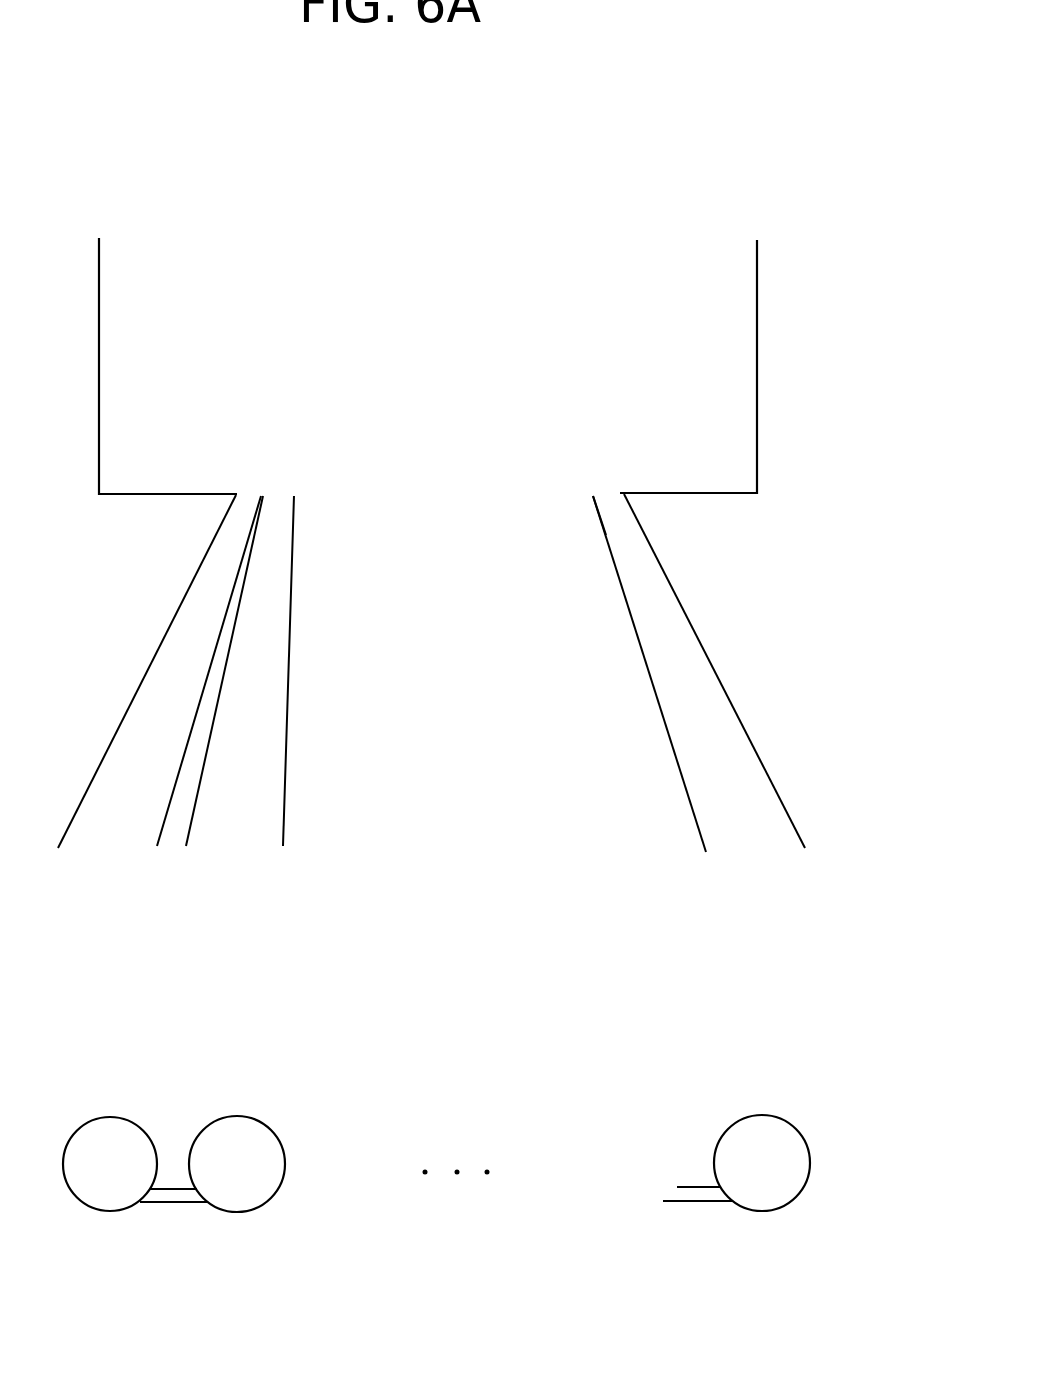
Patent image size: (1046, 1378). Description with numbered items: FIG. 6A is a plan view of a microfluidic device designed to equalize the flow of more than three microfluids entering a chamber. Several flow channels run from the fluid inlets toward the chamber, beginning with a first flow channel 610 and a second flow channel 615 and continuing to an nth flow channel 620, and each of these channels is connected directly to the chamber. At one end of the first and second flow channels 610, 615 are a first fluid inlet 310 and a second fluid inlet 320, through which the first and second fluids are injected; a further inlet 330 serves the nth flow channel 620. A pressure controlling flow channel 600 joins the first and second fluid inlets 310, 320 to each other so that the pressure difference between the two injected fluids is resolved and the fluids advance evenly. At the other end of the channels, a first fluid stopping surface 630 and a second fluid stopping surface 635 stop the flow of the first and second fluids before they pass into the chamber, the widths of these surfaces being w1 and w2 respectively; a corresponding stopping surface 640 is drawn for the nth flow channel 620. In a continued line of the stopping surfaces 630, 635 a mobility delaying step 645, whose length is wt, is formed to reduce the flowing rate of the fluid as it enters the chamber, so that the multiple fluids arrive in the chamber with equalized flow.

The first fluid inlet 310 is at (108, 1213).
The second fluid inlet 320 is at (235, 1213).
The last pixel 330 is at (760, 1212).
The pressure controlling flow channel 600 is at (172, 1205).
The first flow channel 610 is at (110, 845).
The second flow channel 615 is at (232, 845).
The nth flow channel 620 is at (760, 843).
The first fluid stopping surface 630 is at (245, 507).
The second fluid stopping surface 635 is at (277, 515).
The second opening edge 640 is at (617, 503).
The mobility delaying step 645 is at (697, 492).